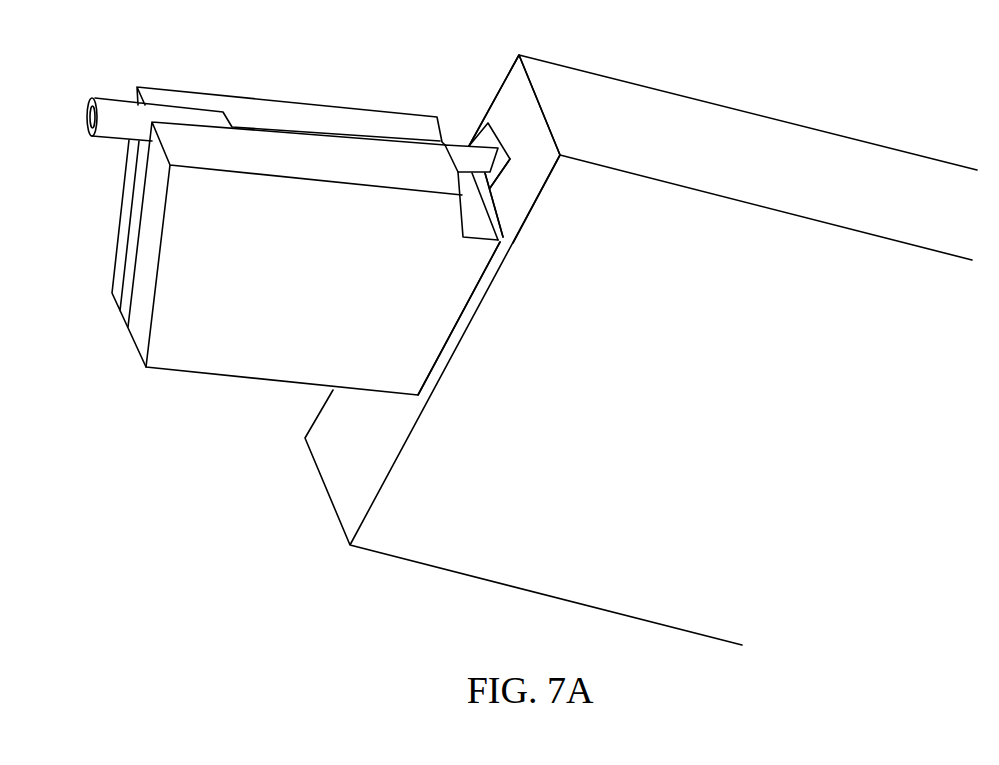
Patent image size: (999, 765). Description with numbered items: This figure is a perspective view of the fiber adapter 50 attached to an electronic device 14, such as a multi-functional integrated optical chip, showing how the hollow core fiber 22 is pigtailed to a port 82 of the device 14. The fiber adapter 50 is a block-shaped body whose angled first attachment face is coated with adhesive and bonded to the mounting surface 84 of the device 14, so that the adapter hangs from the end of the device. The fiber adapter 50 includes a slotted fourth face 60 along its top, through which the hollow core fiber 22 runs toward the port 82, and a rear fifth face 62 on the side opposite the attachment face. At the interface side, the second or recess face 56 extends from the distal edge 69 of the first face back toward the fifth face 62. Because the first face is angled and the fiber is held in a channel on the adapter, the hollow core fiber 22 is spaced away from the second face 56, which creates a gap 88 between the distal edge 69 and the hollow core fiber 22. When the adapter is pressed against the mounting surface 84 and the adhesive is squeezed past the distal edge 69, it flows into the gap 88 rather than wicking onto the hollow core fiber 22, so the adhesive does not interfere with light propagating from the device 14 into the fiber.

The electronic device 14 is at (574, 68).
The hollow core fiber 22 is at (460, 152).
The fiber adapter 50 is at (175, 372).
The second face 56 is at (477, 228).
The fourth face 60 is at (262, 110).
The fifth face 62 is at (142, 307).
The distal edge 69 is at (494, 196).
The port 82 is at (488, 124).
The mounting surface 84 is at (518, 87).
The gap 88 is at (485, 190).